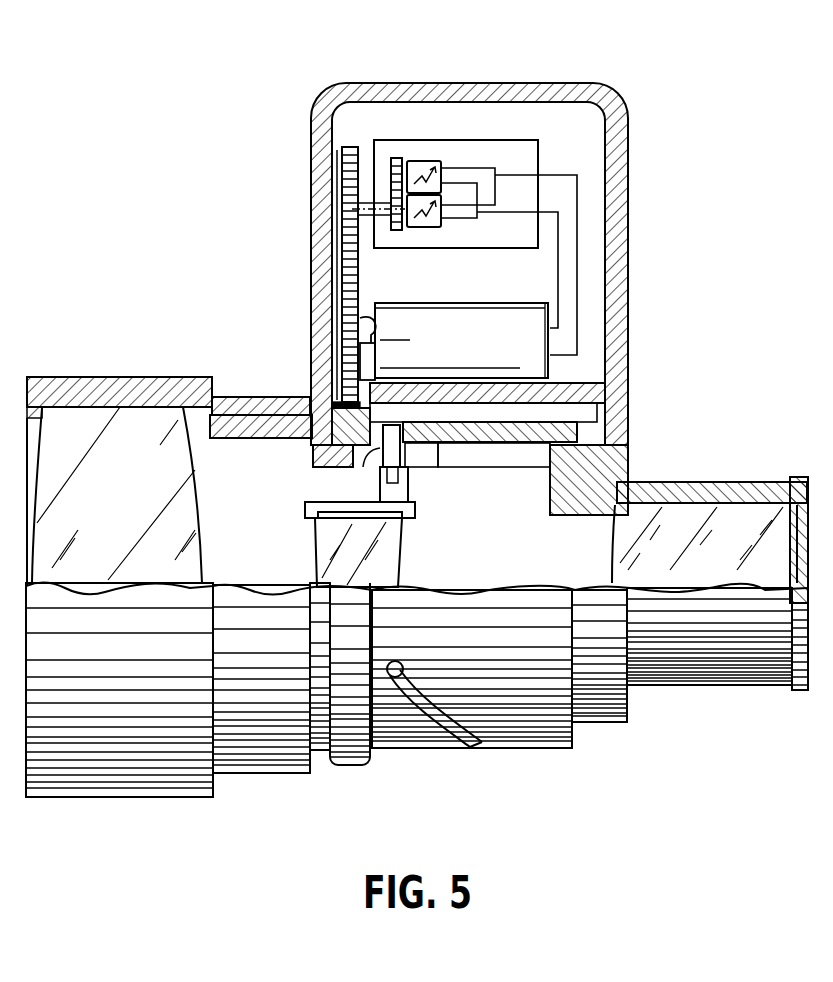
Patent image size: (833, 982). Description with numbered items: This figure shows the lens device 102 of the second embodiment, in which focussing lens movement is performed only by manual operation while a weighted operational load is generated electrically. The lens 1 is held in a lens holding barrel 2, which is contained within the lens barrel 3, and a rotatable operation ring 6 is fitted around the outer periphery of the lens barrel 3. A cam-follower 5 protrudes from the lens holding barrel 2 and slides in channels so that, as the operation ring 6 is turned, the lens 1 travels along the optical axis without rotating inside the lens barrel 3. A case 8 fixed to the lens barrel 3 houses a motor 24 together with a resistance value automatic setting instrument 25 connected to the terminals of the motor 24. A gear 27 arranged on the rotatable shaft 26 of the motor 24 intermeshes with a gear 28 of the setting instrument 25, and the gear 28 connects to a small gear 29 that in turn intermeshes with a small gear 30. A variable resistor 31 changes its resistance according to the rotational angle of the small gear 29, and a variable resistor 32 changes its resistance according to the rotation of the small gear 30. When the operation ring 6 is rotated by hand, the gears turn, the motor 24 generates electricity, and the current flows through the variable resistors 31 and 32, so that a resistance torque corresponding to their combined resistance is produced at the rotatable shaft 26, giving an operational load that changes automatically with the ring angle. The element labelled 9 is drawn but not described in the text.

The lens device 102 is at (90, 305).
The case 8 is at (470, 83).
The gear 28 is at (347, 147).
The small gear 30 is at (396, 158).
The variable resistor 32 is at (423, 161).
The resistance value automatic setting instrument 25 is at (540, 162).
The small gear 29 is at (395, 230).
The variable resistor 31 is at (428, 227).
The rotatable shaft 26 is at (360, 318).
The gear 27 is at (360, 355).
The motor 24 is at (552, 372).
The operation ring 6 is at (577, 437).
The lens barrel 3 is at (628, 467).
The cam-follower 5 is at (383, 452).
The lens holding barrel 2 is at (305, 512).
The lens 1 is at (402, 537).
The nut 9 is at (348, 767).